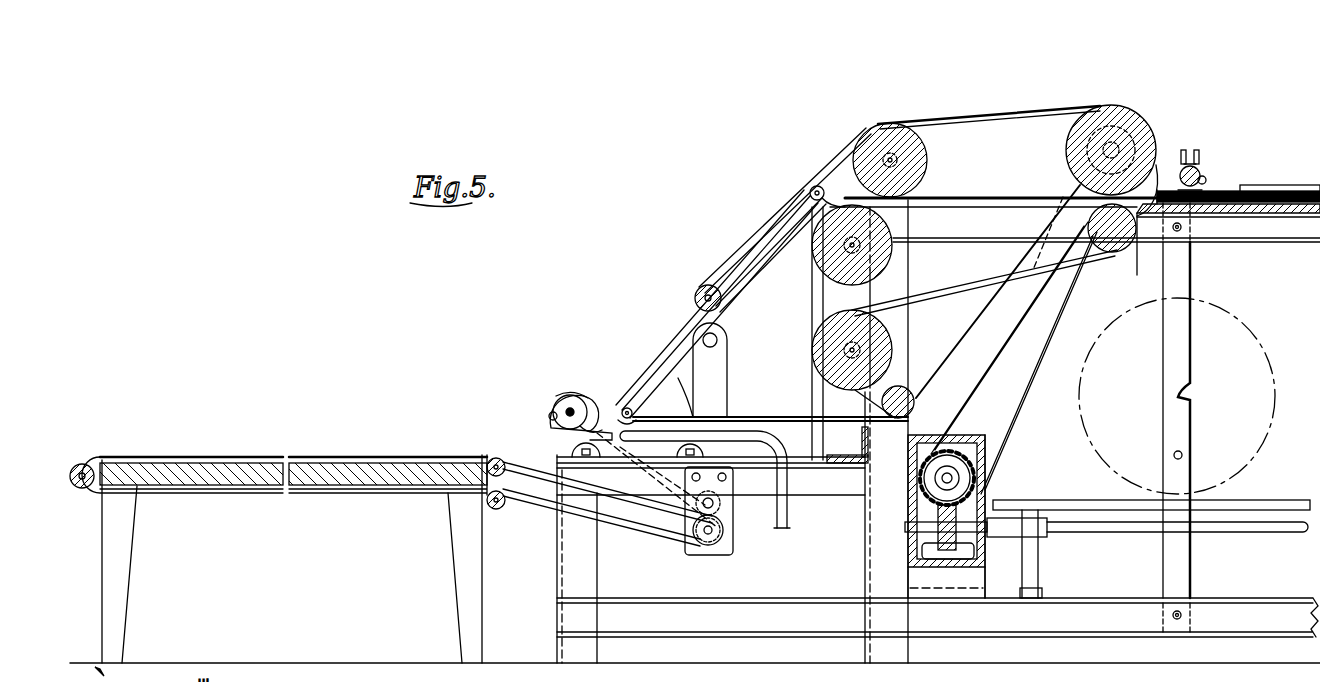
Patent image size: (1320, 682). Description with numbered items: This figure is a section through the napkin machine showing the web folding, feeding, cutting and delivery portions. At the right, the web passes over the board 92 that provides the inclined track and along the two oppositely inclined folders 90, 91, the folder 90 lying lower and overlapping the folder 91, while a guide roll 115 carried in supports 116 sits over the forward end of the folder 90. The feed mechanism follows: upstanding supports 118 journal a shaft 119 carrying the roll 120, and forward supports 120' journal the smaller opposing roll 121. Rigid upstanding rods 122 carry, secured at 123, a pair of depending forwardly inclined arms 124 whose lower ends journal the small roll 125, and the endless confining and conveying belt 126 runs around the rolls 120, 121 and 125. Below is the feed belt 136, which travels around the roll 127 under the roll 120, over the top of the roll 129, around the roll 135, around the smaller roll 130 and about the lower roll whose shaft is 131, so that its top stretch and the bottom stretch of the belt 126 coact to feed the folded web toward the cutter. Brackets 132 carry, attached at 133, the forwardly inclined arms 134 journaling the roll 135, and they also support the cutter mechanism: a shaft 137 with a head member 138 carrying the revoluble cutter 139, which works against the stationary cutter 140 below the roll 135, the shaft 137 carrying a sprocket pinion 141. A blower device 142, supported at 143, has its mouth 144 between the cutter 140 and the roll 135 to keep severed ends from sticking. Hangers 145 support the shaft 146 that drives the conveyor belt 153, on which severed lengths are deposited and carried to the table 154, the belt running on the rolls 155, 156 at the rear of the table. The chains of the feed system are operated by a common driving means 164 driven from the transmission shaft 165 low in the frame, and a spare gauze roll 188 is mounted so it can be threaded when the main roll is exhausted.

The folder 90 is at (1273, 210).
The folder 91 is at (1278, 186).
The board 92 is at (1220, 210).
The guide roll 115 is at (1208, 173).
The supports 116 is at (1195, 158).
The upstanding supports 118 is at (1140, 203).
The shaft 119 is at (1122, 134).
The roll 120 is at (1111, 129).
The supports 120' is at (995, 187).
The roll 121 is at (903, 150).
The upstanding rods 122 is at (818, 288).
The securing point 123 is at (815, 186).
The depending forwardly inclined arms 124 is at (762, 243).
The roll 125 is at (703, 287).
The endless confining and conveying belt 126 is at (1031, 118).
The roll 127 is at (1123, 254).
The roll 129 is at (893, 256).
The roll 130 is at (912, 392).
The shaft 131 is at (847, 343).
The brackets 132 is at (722, 376).
The attachment point 133 is at (683, 338).
The downwardly extending forwardly inclined arms 134 is at (668, 378).
The roll 135 is at (624, 407).
The endless feed belt 136 is at (1005, 212).
The shaft 137 is at (568, 396).
The head member 138 is at (550, 414).
The revoluble cutter 139 is at (582, 429).
The stationary cutter 140 is at (595, 436).
The sprocket pinion 141 is at (552, 397).
The blower device 142 is at (778, 430).
The support point 143 is at (757, 507).
The mouth 144 is at (683, 395).
The hangers 145 is at (700, 557).
The shaft 146 is at (683, 543).
The conveyor belt 153 is at (203, 457).
The table 154 is at (323, 457).
The roll 155 is at (500, 477).
The roll 156 is at (498, 509).
The common driving means 164 is at (967, 434).
The transmission shaft 165 is at (1102, 529).
The roll 188 is at (1257, 338).